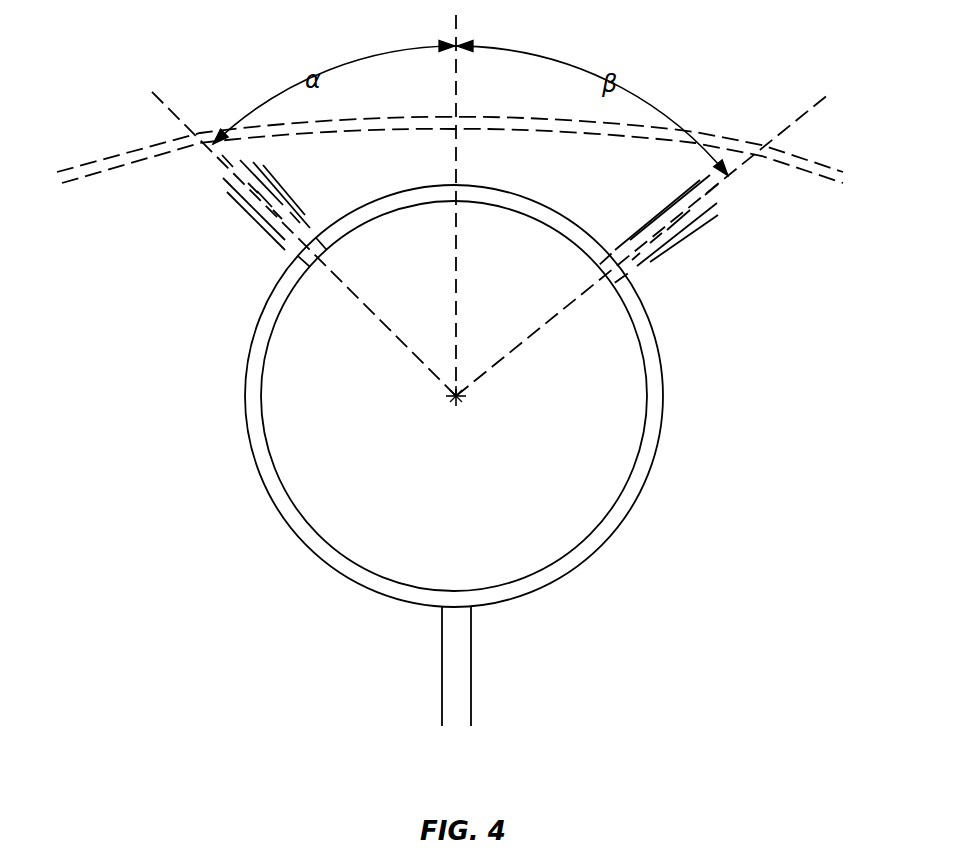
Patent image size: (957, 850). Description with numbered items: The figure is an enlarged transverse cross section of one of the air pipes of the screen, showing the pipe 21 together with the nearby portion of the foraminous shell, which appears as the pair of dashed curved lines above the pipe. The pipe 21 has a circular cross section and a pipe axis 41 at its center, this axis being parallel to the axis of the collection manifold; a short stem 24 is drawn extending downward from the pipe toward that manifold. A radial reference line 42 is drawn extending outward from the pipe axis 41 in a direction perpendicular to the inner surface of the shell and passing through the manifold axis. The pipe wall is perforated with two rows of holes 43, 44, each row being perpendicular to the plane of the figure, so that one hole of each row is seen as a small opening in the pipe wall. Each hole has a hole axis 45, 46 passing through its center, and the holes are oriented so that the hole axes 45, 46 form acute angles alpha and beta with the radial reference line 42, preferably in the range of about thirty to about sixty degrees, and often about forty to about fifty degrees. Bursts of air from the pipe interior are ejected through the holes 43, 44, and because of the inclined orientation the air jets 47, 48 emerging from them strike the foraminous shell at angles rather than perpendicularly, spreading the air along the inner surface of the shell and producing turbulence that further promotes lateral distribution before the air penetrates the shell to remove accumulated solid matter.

The pipe 21 is at (662, 397).
The stem / tube 24 is at (471, 690).
The pipe axis 41 is at (449, 404).
The radial reference line 42 is at (456, 27).
The holes 43 is at (310, 263).
The holes 44 is at (605, 280).
The hole axis 45 is at (175, 101).
The hole axis 46 is at (793, 120).
The air jet 47 is at (262, 227).
The air jet 48 is at (682, 238).